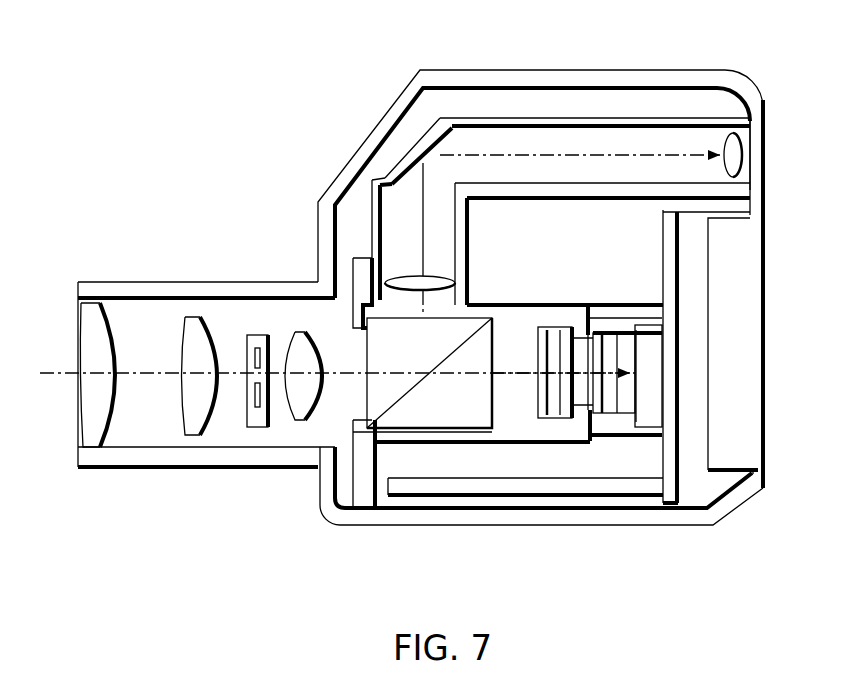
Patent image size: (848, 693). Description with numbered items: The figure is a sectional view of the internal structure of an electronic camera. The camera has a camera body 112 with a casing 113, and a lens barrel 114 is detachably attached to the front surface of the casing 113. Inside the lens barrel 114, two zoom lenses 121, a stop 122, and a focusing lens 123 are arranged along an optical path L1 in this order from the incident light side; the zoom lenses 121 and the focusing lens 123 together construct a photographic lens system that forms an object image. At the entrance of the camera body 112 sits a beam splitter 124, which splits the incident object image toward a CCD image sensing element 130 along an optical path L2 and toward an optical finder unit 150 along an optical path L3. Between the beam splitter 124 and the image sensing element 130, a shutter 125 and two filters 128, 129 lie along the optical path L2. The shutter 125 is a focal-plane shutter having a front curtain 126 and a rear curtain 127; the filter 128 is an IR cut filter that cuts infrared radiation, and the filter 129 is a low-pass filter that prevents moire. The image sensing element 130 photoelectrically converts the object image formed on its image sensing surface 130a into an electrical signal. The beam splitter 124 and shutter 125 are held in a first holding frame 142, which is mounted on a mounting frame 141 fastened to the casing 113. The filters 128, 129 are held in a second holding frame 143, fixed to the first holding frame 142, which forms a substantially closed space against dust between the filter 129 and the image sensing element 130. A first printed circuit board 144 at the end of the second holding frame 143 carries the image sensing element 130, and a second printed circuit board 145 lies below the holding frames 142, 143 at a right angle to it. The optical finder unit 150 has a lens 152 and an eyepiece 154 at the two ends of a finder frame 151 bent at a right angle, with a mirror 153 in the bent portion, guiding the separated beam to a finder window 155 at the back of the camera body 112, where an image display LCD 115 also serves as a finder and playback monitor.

The camera body 112 is at (415, 92).
The casing 113 is at (741, 498).
The lens barrel 114 is at (182, 290).
The image display LCD 115 is at (755, 250).
The zoom lenses 121 is at (193, 423).
The stop 122 is at (254, 424).
The focusing lens 123 is at (297, 411).
The beam splitter 124 is at (417, 420).
The shutter 125 is at (551, 420).
The front curtain 126 is at (543, 338).
The rear curtain 127 is at (565, 323).
The IR cut filter 128 is at (596, 408).
The low-pass filter 129 is at (614, 408).
The CCD image sensing element 130 is at (655, 385).
The image sensing surface 130a is at (640, 355).
The mounting frame 141 is at (363, 498).
The first holding frame 142 is at (575, 312).
The second holding frame 143 is at (608, 322).
The first printed circuit board 144 is at (672, 213).
The second printed circuit board 145 is at (636, 483).
The optical finder unit 150 is at (549, 152).
The finder frame 151 is at (372, 195).
The lens 152 is at (444, 282).
The mirror 153 is at (435, 117).
The eyepiece 154 is at (742, 153).
The finder window 155 is at (765, 122).
The optical path L1 is at (52, 374).
The optical path L2 is at (511, 375).
The optical path L3 is at (423, 213).